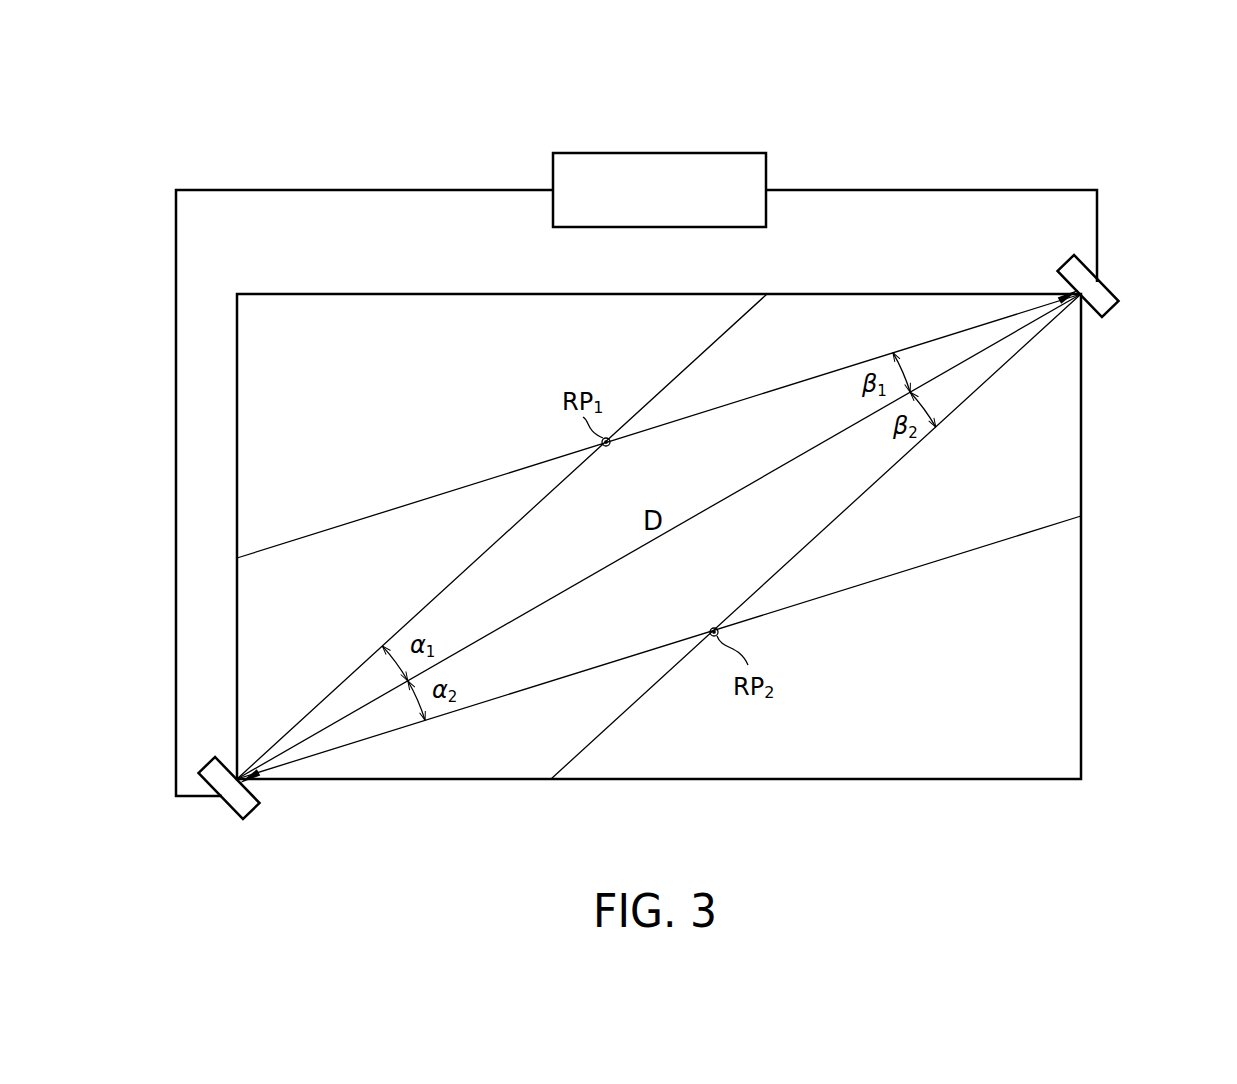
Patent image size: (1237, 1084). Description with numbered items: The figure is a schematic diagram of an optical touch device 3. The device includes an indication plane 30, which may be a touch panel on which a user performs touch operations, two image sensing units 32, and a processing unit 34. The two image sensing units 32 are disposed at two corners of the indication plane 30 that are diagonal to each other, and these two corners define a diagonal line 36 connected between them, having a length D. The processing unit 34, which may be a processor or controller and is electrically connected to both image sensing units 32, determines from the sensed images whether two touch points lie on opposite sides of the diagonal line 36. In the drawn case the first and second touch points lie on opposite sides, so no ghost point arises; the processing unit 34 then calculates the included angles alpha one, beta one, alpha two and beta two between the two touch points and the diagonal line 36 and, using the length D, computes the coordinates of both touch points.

The optical touch device 3 is at (1139, 117).
The indication plane 30 is at (820, 292).
The image sensing unit 32 is at (1113, 289).
The processing unit 34 is at (657, 151).
The diagonal line 36 is at (730, 495).